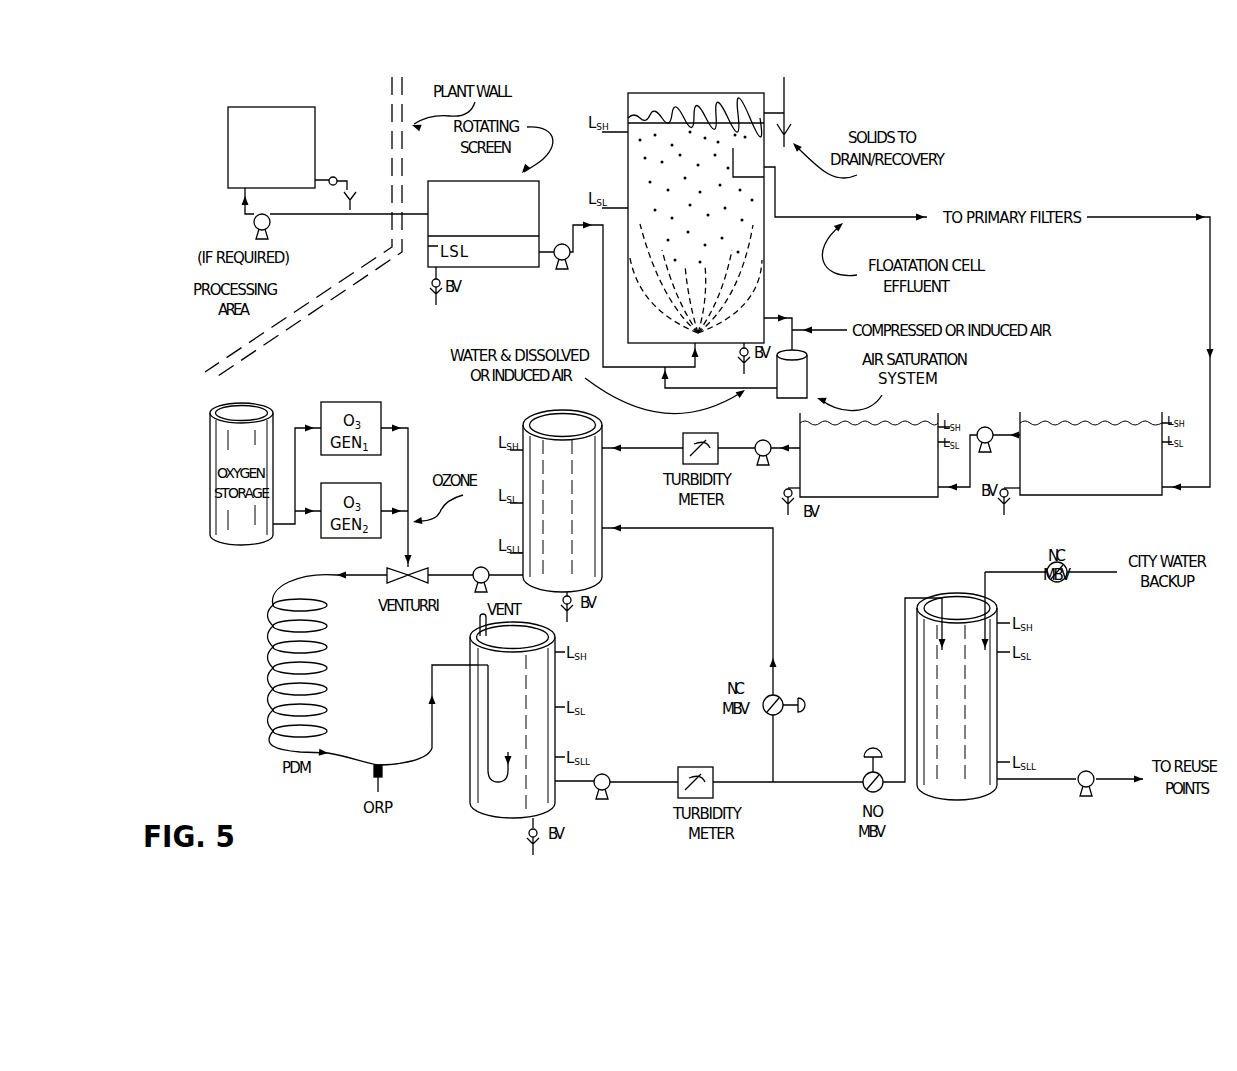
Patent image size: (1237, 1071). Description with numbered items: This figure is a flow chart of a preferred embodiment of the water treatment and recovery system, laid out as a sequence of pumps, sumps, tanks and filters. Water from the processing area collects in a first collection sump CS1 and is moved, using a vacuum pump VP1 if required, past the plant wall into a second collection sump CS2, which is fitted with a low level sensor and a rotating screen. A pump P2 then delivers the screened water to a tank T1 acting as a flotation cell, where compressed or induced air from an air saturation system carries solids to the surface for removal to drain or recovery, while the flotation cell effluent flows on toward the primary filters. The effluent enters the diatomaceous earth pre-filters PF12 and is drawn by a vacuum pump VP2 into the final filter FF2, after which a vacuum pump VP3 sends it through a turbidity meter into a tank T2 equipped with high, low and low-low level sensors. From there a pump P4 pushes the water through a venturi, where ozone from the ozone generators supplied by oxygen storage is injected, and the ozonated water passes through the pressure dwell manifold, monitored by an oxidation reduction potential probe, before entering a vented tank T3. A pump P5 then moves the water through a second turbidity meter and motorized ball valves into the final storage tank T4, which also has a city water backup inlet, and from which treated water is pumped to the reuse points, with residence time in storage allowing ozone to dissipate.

The collection sump CS1 is at (271, 147).
The collection sump CS2 is at (483, 224).
The vacuum pump VP1 is at (243, 226).
The pump P2 is at (562, 271).
The tank T1 is at (696, 208).
The tank T2 is at (562, 501).
The tank T3 is at (512, 716).
The tank T4 is at (957, 696).
The pump P4 is at (480, 570).
The pump P5 is at (602, 777).
The vacuum pump VP2 is at (988, 429).
The vacuum pump VP3 is at (764, 442).
The final filter FF2 is at (869, 455).
The pre-filter PF12 is at (1091, 453).